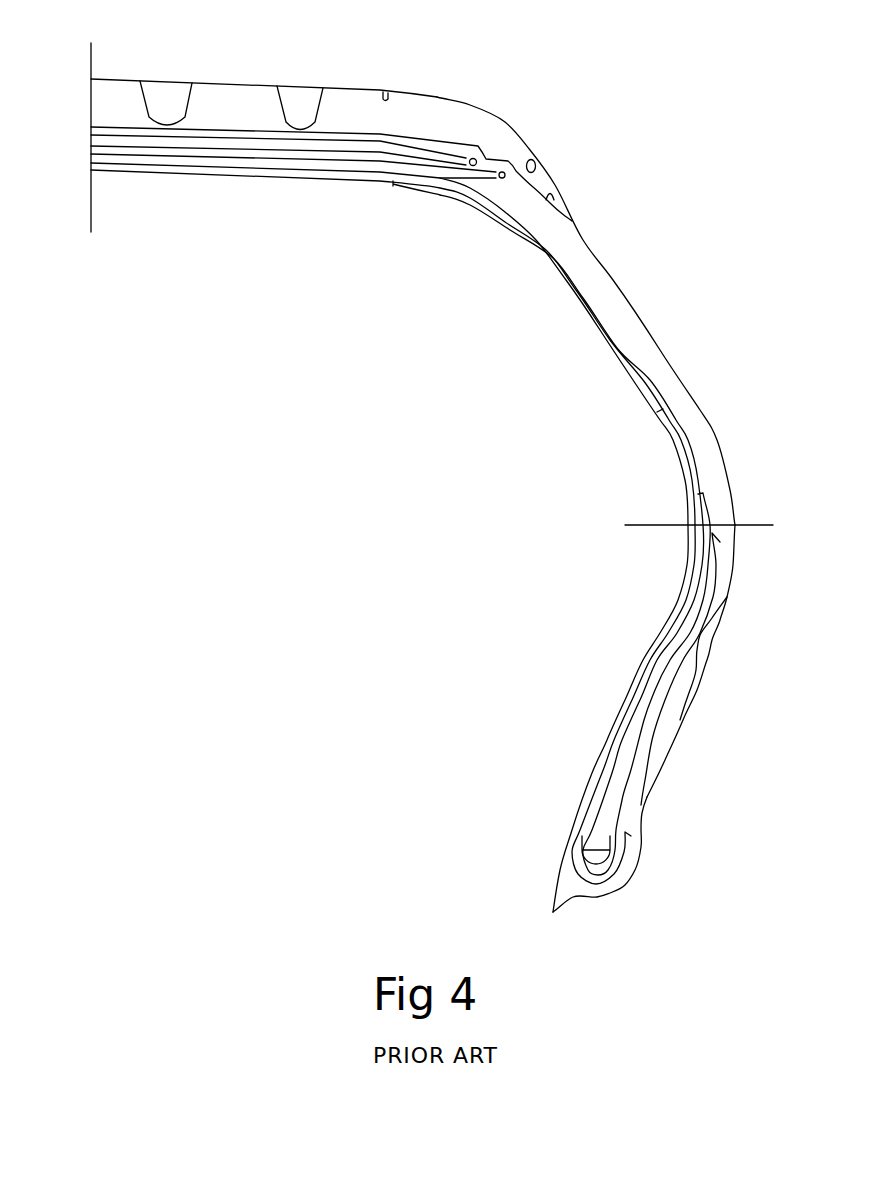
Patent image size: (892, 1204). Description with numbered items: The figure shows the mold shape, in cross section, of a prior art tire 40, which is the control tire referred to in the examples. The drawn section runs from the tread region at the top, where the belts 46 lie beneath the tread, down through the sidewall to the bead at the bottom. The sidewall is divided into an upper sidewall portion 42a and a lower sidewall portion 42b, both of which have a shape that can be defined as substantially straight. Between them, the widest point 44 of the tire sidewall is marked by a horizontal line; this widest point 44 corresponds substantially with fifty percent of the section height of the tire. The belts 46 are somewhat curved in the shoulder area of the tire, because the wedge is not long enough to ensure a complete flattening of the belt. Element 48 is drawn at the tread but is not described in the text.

The tread 48 is at (358, 88).
The belts 46 is at (436, 160).
The upper sidewall portion 42a is at (613, 280).
The widest point 44 is at (735, 525).
The lower sidewall portion 42b is at (700, 690).
The prior art tire 40 is at (662, 851).